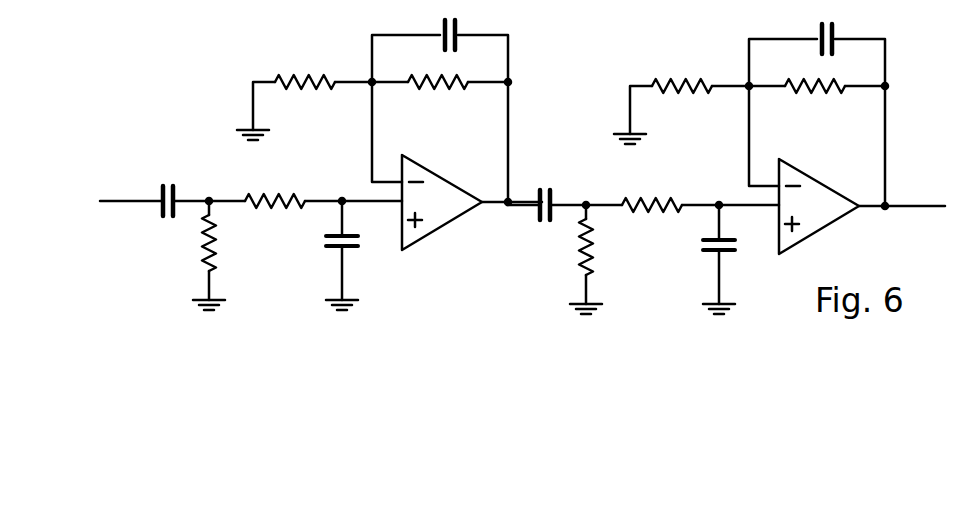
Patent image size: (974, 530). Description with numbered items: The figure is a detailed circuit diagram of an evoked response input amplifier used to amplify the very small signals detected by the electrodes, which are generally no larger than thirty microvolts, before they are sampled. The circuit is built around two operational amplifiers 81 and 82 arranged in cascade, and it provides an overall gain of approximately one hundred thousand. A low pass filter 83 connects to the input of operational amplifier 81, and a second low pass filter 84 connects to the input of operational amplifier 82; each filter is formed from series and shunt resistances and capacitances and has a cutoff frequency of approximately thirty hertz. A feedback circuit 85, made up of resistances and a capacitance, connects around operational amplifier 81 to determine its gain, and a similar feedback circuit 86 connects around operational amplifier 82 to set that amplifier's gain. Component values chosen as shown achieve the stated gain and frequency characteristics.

The operational amplifier 81 is at (438, 232).
The operational amplifier 82 is at (820, 209).
The low pass filter 83 is at (287, 252).
The low pass filter 84 is at (637, 252).
The feedback circuit 85 is at (442, 30).
The feedback circuit 86 is at (751, 108).